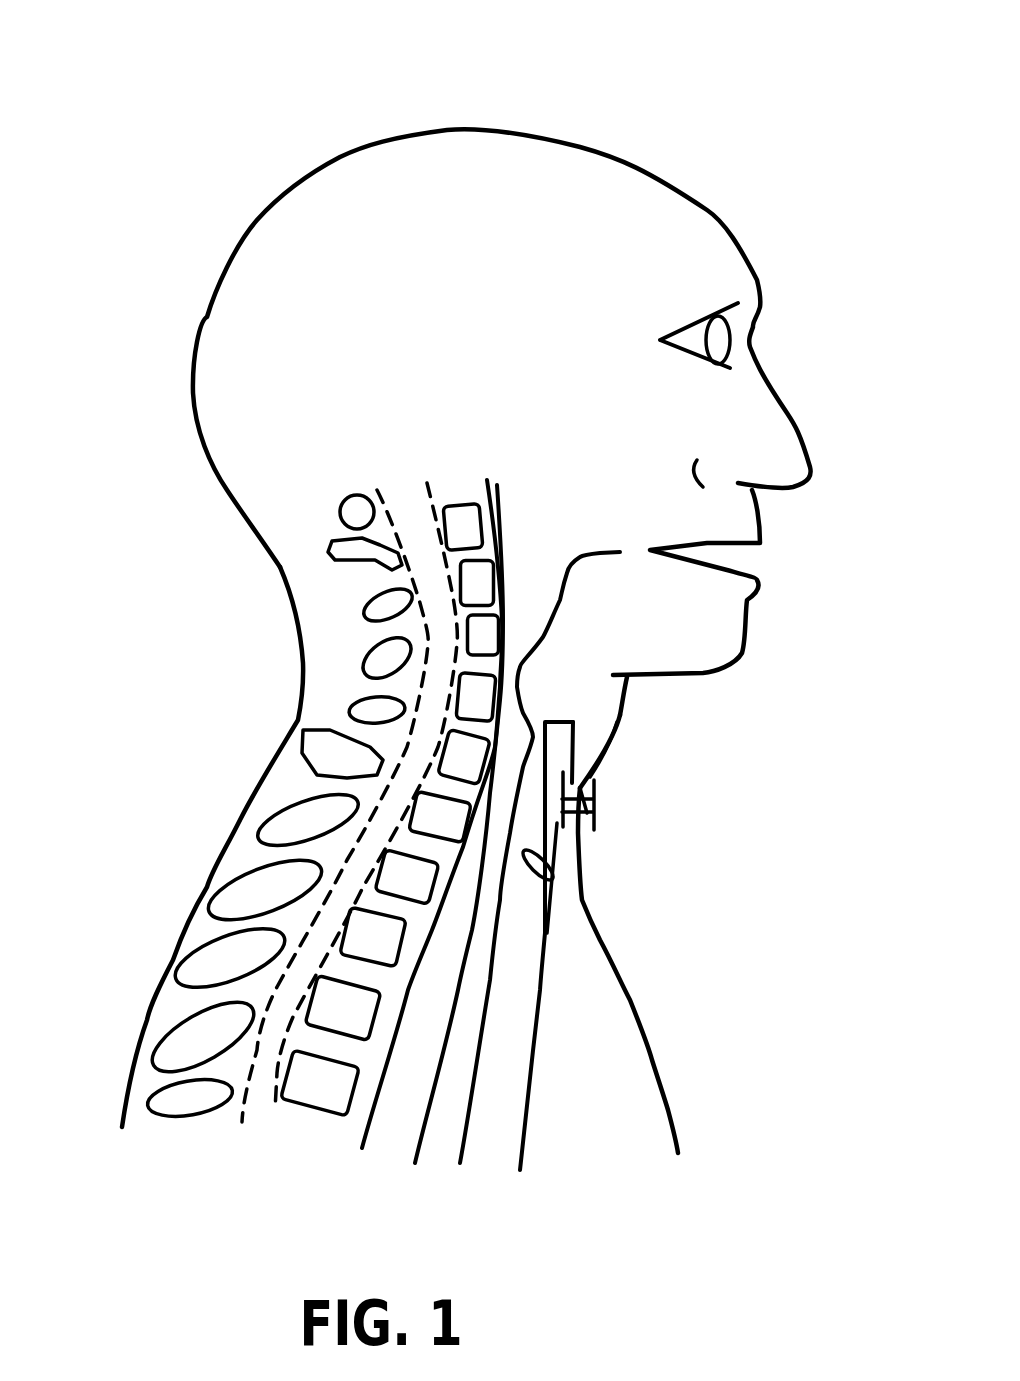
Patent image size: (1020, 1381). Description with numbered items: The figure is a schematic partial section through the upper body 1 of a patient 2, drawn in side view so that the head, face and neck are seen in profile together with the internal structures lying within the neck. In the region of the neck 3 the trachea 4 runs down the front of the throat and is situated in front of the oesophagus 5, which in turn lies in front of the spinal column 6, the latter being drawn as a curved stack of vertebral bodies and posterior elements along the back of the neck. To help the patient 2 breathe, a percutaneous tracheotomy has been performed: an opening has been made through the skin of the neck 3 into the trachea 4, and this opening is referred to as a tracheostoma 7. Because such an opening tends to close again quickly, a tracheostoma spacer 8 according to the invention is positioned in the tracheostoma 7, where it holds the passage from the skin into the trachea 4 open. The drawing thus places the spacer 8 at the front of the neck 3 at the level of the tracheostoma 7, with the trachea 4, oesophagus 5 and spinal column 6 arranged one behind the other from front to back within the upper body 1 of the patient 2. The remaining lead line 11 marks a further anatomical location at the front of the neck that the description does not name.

The upper body 1 is at (197, 885).
The patient 2 is at (752, 128).
The neck 3 is at (303, 675).
The trachea 4 is at (495, 1112).
The oesophagus 5 is at (392, 1117).
The spinal column 6 is at (272, 1050).
The tracheostoma 7 is at (590, 863).
The tracheostoma spacer 8 is at (597, 805).
The larynx 11 is at (627, 712).